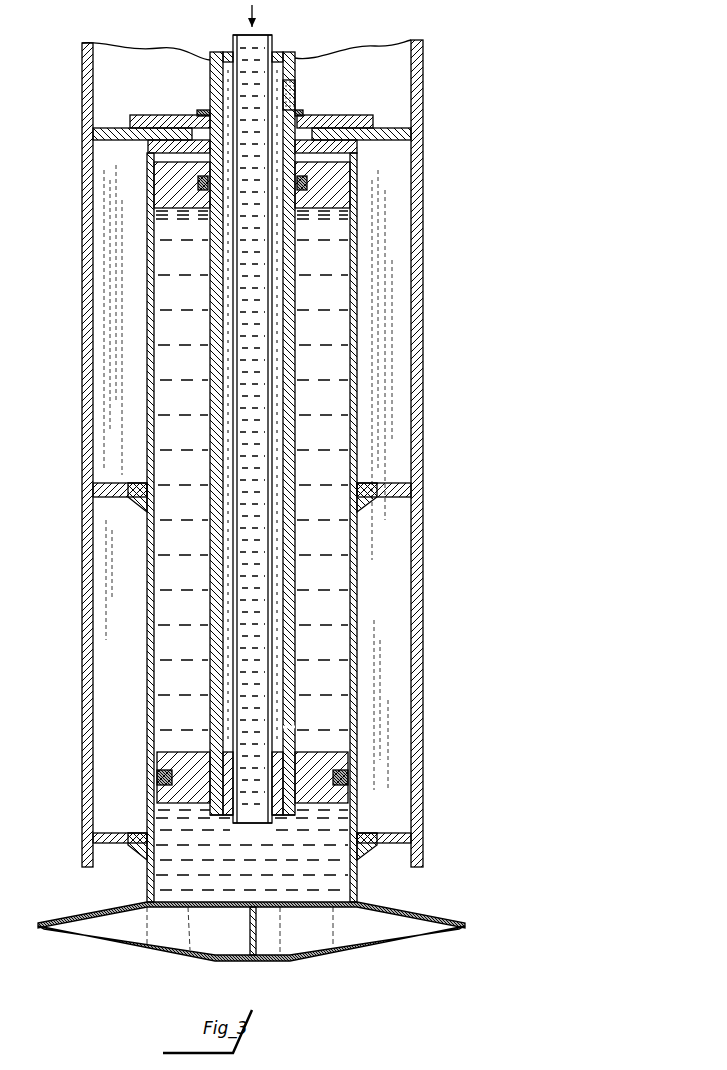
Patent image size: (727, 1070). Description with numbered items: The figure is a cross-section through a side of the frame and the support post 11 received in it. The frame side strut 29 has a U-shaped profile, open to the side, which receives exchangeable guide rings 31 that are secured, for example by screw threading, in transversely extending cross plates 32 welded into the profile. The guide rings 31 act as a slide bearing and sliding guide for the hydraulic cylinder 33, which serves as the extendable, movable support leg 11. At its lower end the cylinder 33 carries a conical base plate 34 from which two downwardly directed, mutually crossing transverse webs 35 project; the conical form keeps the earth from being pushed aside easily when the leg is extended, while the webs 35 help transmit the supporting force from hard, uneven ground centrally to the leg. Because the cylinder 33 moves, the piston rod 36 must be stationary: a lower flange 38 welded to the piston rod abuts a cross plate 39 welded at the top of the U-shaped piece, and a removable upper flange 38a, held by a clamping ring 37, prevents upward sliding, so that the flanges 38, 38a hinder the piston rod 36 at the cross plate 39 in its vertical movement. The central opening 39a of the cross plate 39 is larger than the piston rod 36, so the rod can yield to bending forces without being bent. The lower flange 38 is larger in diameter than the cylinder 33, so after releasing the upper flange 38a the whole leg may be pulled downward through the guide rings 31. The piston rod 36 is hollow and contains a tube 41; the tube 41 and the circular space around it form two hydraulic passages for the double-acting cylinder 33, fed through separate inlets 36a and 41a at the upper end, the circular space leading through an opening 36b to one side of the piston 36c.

The support post 11 is at (72, 377).
The frame side strut 29 is at (419, 338).
The guide ring 31 is at (366, 502).
The cross plate 32 is at (94, 490).
The hydraulic cylinder 33 is at (358, 670).
The conical base plate 34 is at (386, 945).
The transverse web 35 is at (138, 930).
The piston rod 36 is at (291, 360).
The inlet 36a is at (296, 82).
The opening 36b is at (292, 733).
The piston 36c is at (303, 790).
The clamping ring 37 is at (205, 110).
The lower flange 38 is at (358, 148).
The upper flange 38a is at (321, 117).
The cross plate 39 is at (94, 134).
The central opening 39a is at (197, 119).
The tube 41 is at (278, 512).
The inlet 41a is at (262, 37).